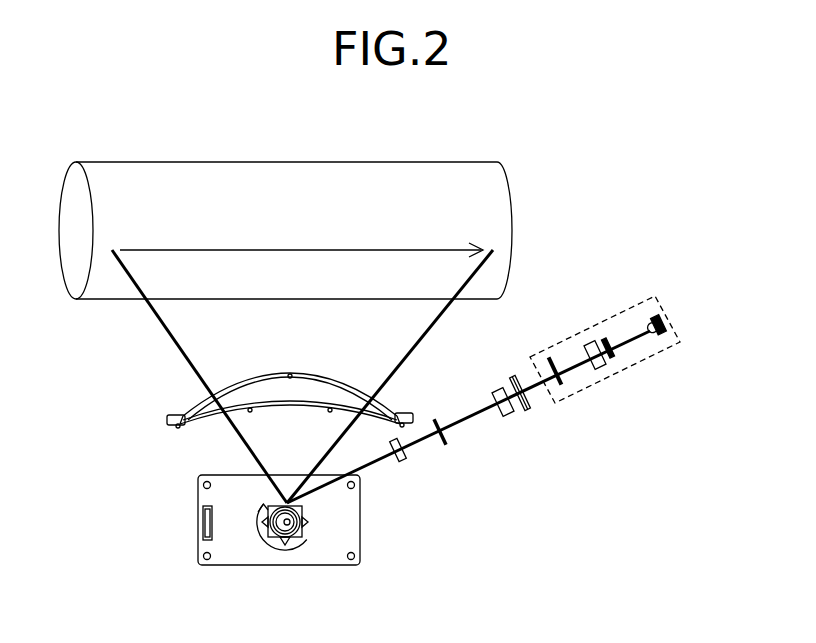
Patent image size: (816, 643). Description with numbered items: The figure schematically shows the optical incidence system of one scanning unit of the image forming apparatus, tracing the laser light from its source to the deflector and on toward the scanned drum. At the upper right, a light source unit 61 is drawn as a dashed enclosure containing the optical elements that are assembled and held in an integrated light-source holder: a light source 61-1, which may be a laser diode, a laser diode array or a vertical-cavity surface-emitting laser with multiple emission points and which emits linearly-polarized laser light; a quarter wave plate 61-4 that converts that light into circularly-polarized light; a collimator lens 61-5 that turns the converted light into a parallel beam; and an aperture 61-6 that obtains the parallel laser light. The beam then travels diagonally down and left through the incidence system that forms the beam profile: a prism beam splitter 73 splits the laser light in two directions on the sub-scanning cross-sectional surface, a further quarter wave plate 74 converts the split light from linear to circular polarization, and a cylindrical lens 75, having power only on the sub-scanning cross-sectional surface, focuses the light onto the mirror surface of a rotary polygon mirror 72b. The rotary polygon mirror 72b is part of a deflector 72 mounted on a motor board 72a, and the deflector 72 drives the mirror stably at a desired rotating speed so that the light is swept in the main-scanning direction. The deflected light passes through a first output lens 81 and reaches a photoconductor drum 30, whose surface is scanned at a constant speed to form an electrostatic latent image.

The photoconductor drum 30 is at (508, 229).
The first output lens 81 is at (185, 413).
The deflector 72 is at (348, 523).
The motor board 72a is at (340, 550).
The rotary polygon mirror 72b is at (300, 522).
The prism beam splitter 73 is at (497, 392).
The 1/4 wave plate 74 is at (447, 446).
The cylindrical lens 75 is at (401, 462).
The light source unit 61 is at (613, 342).
The light source 61-1 is at (666, 338).
The 1/4 wave plate 61-4 is at (612, 360).
The collimator lens 61-5 is at (590, 342).
The aperture 61-6 is at (552, 358).